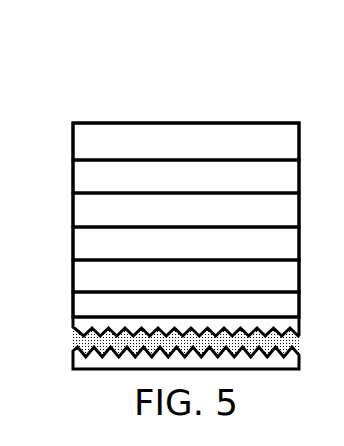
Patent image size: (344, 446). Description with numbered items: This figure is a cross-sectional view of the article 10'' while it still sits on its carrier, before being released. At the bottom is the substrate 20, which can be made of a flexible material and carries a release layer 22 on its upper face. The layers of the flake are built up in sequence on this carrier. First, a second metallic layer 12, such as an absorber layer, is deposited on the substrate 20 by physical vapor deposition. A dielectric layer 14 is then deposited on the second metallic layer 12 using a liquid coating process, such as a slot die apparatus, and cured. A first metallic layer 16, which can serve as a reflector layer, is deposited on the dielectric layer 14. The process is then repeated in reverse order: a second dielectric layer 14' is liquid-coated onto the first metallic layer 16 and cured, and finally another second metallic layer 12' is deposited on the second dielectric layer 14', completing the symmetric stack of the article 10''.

The article 10'' is at (186, 189).
The second metallic layer 12' is at (160, 141).
The second dielectric layer 14' is at (160, 176).
The first metallic layer 16 is at (73, 210).
The dielectric layer 14 is at (160, 243).
The second metallic layer 12 is at (160, 276).
The release layer 22 is at (73, 307).
The substrate 20 is at (73, 352).